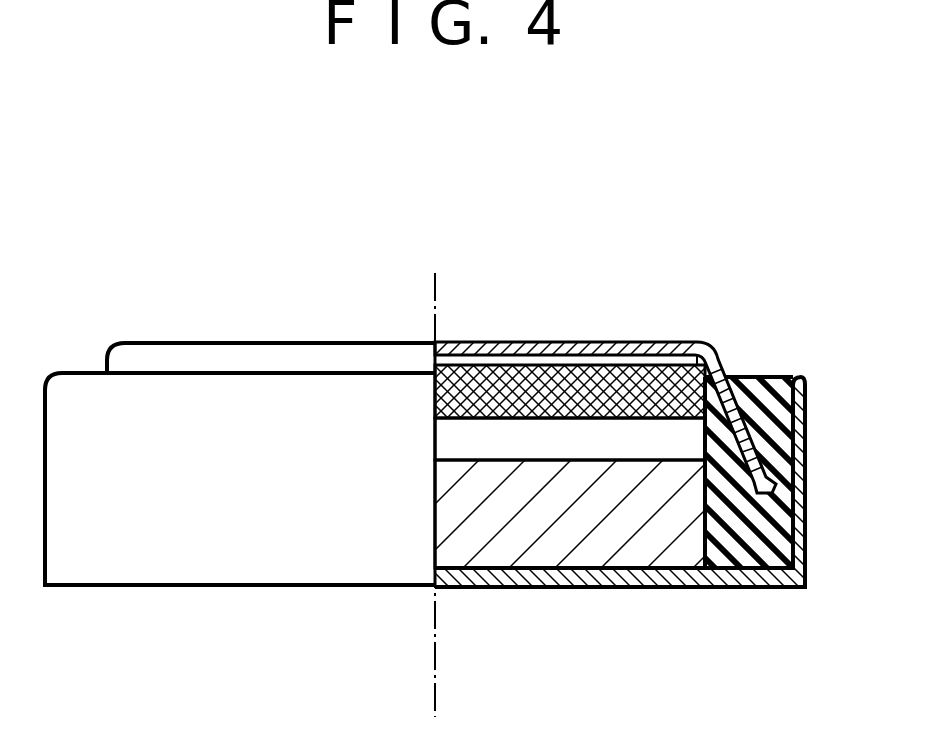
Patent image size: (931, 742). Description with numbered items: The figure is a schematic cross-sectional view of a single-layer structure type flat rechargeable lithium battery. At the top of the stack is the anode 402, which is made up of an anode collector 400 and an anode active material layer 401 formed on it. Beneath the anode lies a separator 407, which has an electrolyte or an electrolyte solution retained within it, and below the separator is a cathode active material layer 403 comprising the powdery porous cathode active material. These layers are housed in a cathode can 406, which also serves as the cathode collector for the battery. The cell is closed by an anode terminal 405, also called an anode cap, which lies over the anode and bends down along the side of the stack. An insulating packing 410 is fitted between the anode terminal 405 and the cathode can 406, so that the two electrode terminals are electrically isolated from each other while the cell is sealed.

The anode collector 400 is at (578, 358).
The anode active material layer 401 is at (655, 370).
The anode 402 is at (757, 193).
The cathode active material layer 403 is at (603, 528).
The anode terminal 405 is at (510, 342).
The cathode can 406 is at (735, 578).
The separator 407 is at (528, 440).
The insulating packing 410 is at (770, 385).